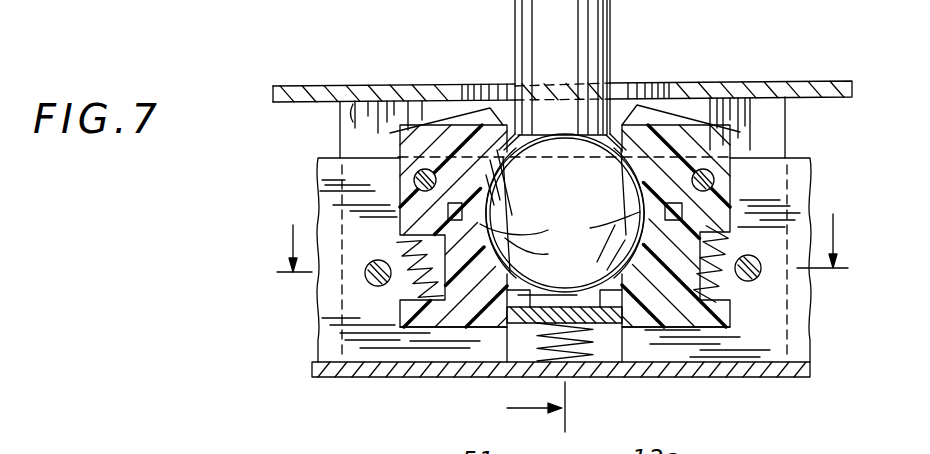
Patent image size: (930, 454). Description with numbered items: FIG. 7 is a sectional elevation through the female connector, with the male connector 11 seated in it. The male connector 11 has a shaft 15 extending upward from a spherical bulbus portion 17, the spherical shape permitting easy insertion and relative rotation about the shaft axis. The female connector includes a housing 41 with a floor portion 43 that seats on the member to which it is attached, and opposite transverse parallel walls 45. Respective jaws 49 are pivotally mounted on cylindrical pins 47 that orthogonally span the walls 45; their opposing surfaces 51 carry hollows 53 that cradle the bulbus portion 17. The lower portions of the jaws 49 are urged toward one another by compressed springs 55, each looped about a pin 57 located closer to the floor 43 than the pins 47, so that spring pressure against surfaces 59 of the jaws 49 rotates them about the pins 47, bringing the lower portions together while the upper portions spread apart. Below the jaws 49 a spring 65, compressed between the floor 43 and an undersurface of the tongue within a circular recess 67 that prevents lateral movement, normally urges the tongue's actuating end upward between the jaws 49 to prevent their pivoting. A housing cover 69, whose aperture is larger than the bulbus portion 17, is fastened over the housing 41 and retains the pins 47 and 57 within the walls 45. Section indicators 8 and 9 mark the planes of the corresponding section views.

The section line 8- 8 is at (560, 227).
The section line 9- 9 is at (522, 407).
The male connector 11 is at (518, 78).
The shaft 15 is at (600, 52).
The bulbus portion 17 is at (566, 198).
The housing 41 is at (312, 376).
The floor portion 43 is at (345, 345).
The walls 45 is at (354, 118).
The cylindrical pins 47 is at (402, 184).
The jaws 49 is at (440, 118).
The opposing surfaces 51 is at (507, 332).
The hollows 53 is at (612, 210).
The compressed springs 55 is at (404, 258).
The pin 57 is at (384, 286).
The surfaces 59 is at (395, 138).
The spring 65 is at (568, 360).
The circular recess 67 is at (590, 326).
The housing cover 69 is at (287, 86).